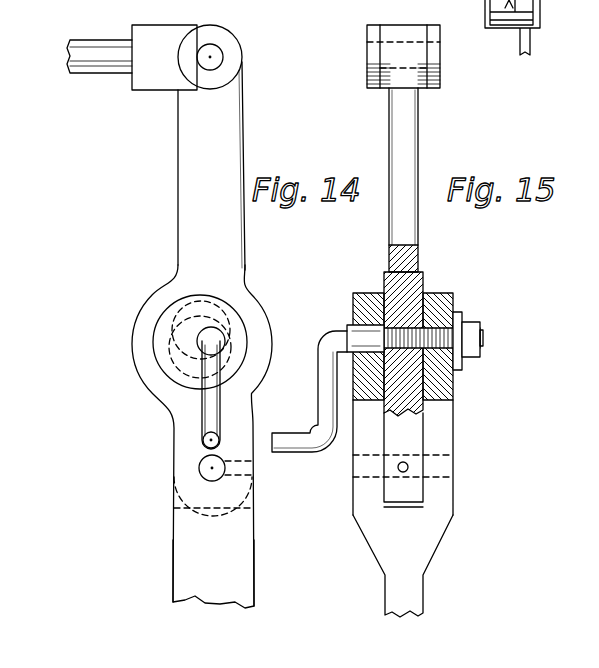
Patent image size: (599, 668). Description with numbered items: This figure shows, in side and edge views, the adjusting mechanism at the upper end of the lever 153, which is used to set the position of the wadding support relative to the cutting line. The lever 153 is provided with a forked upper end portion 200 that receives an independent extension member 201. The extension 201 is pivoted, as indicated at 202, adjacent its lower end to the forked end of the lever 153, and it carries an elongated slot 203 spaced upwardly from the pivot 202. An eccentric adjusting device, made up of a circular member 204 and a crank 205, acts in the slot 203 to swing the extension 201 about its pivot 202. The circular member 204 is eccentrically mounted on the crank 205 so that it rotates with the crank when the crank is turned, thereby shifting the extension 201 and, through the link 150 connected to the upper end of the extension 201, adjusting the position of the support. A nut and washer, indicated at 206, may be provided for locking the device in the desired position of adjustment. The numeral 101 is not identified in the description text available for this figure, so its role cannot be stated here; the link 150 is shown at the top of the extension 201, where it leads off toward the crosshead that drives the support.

In FIG. 15, the frame member 101 is at (516, 42).
In FIG. 14, the link 150 is at (114, 68).
In FIG. 14, the lever 153 is at (178, 570).
In FIG. 15, the lever 153 is at (410, 596).
In FIG. 14, the forked upper end portion 200 is at (246, 420).
In FIG. 15, the forked upper end portion 200 is at (444, 428).
In FIG. 14, the extension member 201 is at (228, 241).
In FIG. 15, the extension member 201 is at (410, 230).
In FIG. 14, the pivot 202 is at (199, 468).
In FIG. 15, the pivot 202 is at (440, 478).
In FIG. 14, the elongated slot 203 is at (215, 313).
In FIG. 15, the elongated slot 203 is at (408, 302).
In FIG. 14, the circular member 204 is at (180, 342).
In FIG. 15, the circular member 204 is at (420, 376).
In FIG. 14, the crank 205 is at (203, 410).
In FIG. 15, the crank 205 is at (333, 341).
In FIG. 15, the nut and washer 206 is at (466, 330).